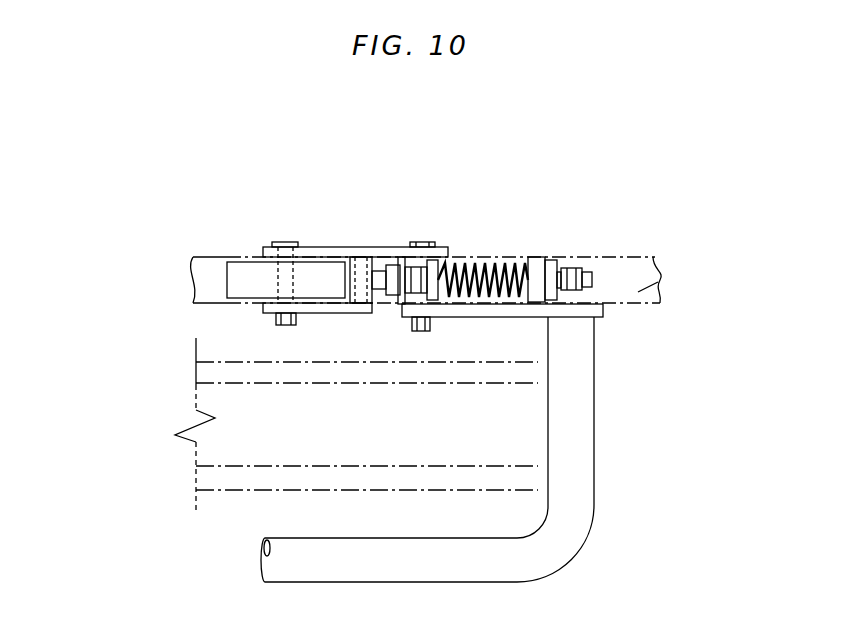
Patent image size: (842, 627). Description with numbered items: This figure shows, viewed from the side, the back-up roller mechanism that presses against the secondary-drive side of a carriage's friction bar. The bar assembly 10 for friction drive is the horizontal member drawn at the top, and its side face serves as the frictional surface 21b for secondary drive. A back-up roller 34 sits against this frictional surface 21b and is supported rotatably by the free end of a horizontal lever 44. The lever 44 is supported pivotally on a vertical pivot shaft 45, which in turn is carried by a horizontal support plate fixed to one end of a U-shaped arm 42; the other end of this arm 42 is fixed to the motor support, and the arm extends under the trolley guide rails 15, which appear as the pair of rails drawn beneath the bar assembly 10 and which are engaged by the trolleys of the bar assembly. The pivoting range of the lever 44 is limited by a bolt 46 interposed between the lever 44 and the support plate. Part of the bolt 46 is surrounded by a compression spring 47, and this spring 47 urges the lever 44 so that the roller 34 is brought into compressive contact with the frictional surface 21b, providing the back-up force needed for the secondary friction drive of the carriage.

The bar assembly 10 is at (632, 258).
The trolley guide rails 15 is at (228, 448).
The frictional surface for secondary drive 21b is at (663, 278).
The back-up roller 34 is at (245, 277).
The U-shaped arm 42 is at (573, 447).
The horizontal lever 44 is at (338, 247).
The vertical pivot shaft 45 is at (418, 242).
The bolt 46 is at (500, 280).
The compression spring 47 is at (480, 320).